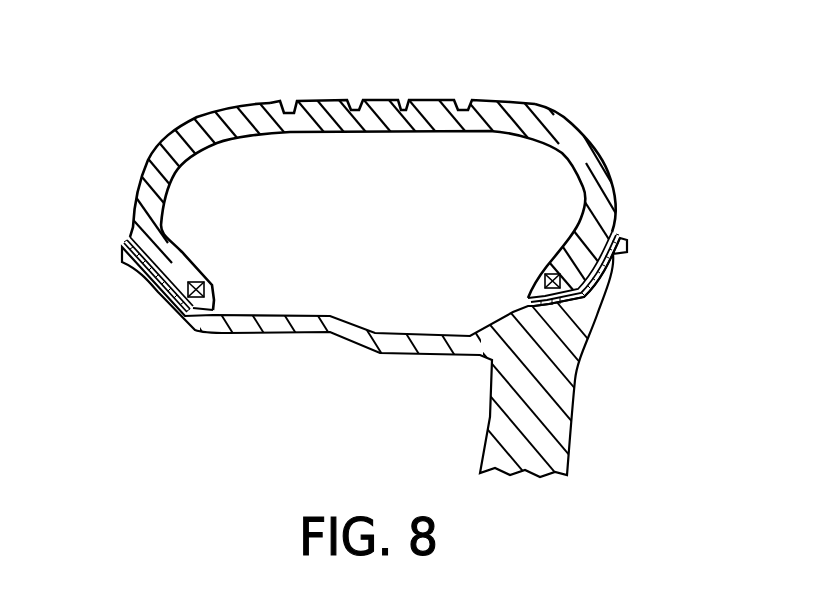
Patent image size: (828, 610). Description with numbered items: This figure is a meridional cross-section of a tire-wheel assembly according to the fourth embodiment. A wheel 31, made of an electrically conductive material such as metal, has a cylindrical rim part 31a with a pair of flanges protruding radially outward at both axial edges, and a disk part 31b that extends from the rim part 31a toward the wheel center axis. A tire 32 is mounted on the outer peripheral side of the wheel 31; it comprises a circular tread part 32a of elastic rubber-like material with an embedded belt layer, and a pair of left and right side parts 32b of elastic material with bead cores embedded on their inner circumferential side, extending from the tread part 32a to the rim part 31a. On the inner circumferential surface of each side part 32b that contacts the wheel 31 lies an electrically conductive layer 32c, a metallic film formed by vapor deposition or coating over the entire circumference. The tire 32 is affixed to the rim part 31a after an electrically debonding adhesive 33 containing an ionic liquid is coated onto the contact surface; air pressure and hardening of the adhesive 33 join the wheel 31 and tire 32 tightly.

The wheel 31 is at (574, 440).
The rim part 31a is at (223, 330).
The disk part 31b is at (492, 417).
The tire 32 is at (541, 104).
The tread part 32a is at (381, 105).
The side parts 32b is at (150, 180).
The electrically conductive layer 32c is at (133, 237).
The electrically debonding adhesive 33 is at (163, 293).